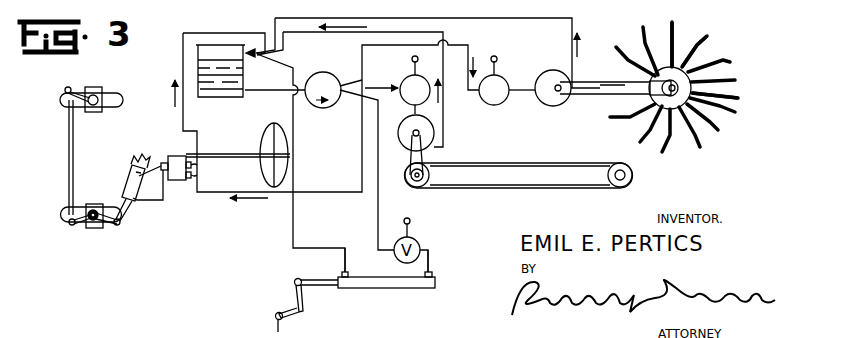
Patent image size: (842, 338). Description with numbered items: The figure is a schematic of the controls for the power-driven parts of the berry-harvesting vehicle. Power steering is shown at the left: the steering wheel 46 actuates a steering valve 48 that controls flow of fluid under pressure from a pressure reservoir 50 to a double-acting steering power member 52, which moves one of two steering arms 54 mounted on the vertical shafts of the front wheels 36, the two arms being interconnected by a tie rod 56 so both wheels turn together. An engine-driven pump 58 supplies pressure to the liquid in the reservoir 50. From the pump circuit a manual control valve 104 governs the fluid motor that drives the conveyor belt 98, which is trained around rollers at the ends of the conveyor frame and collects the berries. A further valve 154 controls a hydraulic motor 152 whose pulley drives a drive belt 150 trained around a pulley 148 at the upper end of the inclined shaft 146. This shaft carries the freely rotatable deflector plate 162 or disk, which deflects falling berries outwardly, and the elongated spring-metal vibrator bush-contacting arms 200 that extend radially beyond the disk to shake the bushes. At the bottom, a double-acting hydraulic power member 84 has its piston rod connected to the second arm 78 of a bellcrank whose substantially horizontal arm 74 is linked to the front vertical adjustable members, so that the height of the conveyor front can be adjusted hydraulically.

The front wheels 36 is at (107, 93).
The tie rod 56 is at (69, 153).
The double-acting steering power member 52 is at (130, 172).
The steering arms 54 is at (75, 226).
The steering valve 48 is at (178, 182).
The pressure reservoir 50 is at (214, 92).
The steering wheel 46 is at (262, 135).
The pump 58 is at (325, 108).
The manual control valve 104 is at (410, 76).
The valve 154 is at (489, 104).
The motor 152 is at (541, 76).
The drive belt 150 is at (592, 96).
The conveyor belt 98 is at (505, 163).
The vibrator bush-contacting arm 200 is at (684, 30).
The deflector plate 162 is at (707, 52).
The shaft 146 is at (731, 69).
The pulley 148 is at (728, 102).
The second arm 78 is at (292, 292).
The horizontal arm 74 is at (284, 311).
The double-acting hydraulic power member 84 is at (385, 284).